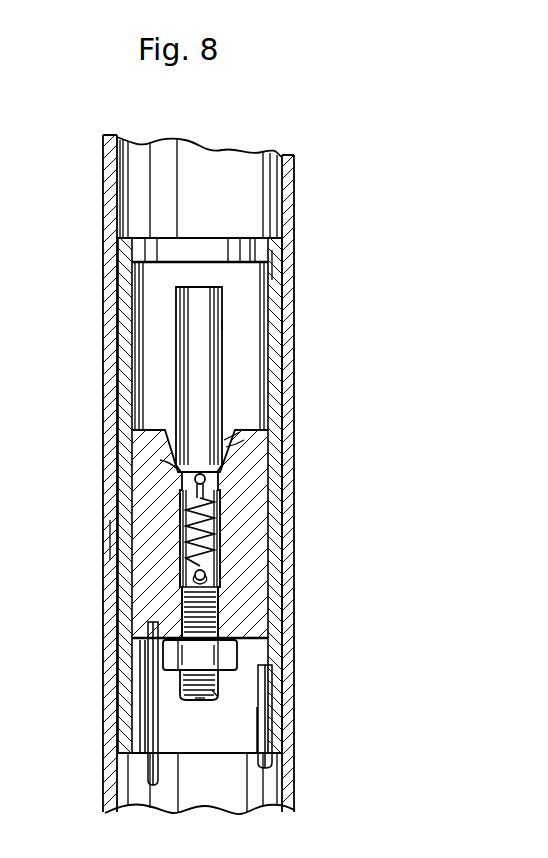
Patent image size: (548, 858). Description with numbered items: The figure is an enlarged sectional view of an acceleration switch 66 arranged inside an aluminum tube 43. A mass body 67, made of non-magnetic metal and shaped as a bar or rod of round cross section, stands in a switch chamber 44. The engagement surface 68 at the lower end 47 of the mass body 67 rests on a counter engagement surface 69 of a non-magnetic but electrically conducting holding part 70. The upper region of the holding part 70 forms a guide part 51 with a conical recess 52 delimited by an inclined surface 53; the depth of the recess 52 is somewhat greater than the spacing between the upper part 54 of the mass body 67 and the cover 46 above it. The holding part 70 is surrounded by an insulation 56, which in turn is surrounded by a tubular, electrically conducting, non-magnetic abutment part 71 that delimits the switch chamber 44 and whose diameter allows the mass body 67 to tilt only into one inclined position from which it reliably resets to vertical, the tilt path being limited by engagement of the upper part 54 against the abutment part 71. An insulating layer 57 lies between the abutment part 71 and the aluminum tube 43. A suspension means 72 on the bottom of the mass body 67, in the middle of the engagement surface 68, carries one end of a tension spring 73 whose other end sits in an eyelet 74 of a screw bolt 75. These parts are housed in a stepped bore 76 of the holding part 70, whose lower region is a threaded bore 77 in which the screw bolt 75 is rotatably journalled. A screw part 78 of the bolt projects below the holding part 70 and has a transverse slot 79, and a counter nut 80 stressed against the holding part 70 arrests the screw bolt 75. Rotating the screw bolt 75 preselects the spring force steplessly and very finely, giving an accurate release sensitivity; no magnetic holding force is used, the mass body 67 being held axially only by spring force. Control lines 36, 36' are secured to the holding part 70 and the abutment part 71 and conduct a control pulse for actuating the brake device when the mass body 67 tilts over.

The aluminum tube 43 is at (108, 191).
The acceleration switch 66 is at (318, 177).
The cover 46 is at (253, 238).
The abutment part 71 is at (272, 263).
The upper part 54 is at (210, 304).
The mass body 67 is at (224, 325).
The switch chamber 44 is at (258, 357).
The guide part 51 is at (148, 430).
The lower end 47 is at (220, 440).
The conical recess 52 is at (228, 440).
The inclined surface 53 is at (232, 447).
The engagement surface 68 is at (206, 480).
The suspension means 72 is at (212, 492).
The counter engagement surface 69 is at (178, 470).
The insulation 56 is at (137, 490).
The insulating layer 57 is at (120, 537).
The stepped bore 76 is at (187, 567).
The holding part 70 is at (240, 527).
The tension spring 73 is at (214, 545).
The eyelet 74 is at (210, 578).
The screw bolt 75 is at (215, 605).
The threaded bore 77 is at (238, 650).
The counter nut 80 is at (222, 678).
The transverse slot 79 is at (202, 701).
The screw part 78 is at (219, 697).
The control line 36 is at (109, 708).
The control line 36' is at (305, 724).